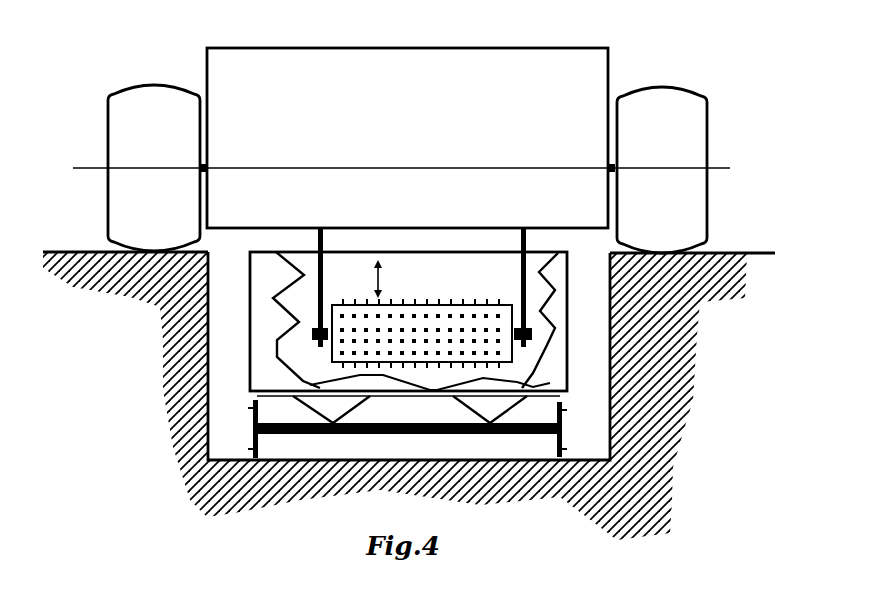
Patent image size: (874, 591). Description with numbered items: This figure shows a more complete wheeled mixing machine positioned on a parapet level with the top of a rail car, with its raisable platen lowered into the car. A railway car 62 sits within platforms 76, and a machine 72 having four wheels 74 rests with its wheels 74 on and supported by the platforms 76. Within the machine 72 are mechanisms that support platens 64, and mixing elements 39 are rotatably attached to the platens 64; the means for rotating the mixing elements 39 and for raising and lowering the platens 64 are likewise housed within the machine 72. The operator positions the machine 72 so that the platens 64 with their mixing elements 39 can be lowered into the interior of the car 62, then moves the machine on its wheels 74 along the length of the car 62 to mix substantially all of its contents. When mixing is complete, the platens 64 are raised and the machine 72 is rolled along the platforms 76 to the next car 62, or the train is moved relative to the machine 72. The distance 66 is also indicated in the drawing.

The machine 72 is at (401, 138).
The wheels 74 is at (125, 91).
The platforms 76 is at (83, 249).
The railway car 62 is at (270, 341).
The platens 64 is at (518, 240).
The clearance gap 66 is at (383, 277).
The mixing elements 39 is at (550, 383).